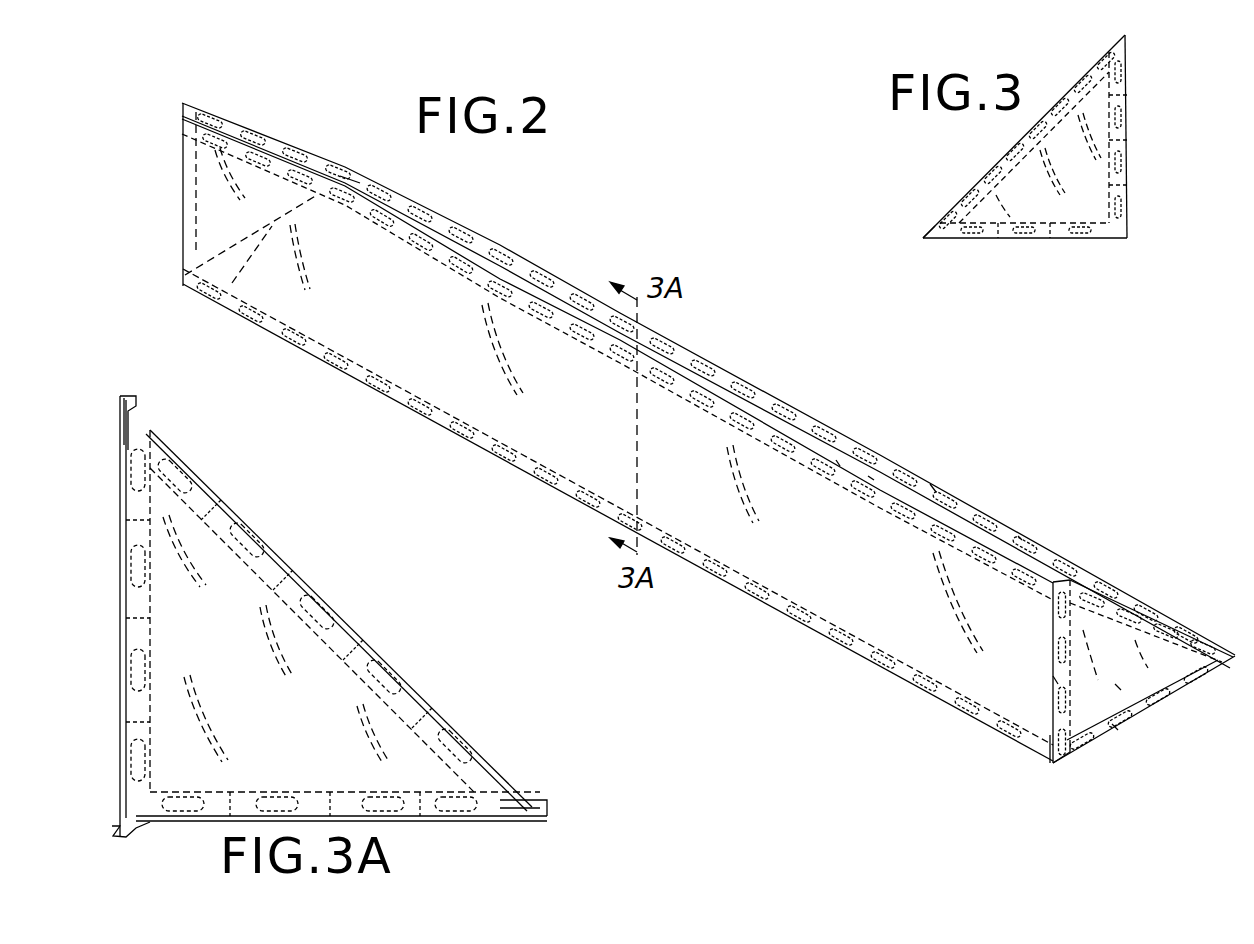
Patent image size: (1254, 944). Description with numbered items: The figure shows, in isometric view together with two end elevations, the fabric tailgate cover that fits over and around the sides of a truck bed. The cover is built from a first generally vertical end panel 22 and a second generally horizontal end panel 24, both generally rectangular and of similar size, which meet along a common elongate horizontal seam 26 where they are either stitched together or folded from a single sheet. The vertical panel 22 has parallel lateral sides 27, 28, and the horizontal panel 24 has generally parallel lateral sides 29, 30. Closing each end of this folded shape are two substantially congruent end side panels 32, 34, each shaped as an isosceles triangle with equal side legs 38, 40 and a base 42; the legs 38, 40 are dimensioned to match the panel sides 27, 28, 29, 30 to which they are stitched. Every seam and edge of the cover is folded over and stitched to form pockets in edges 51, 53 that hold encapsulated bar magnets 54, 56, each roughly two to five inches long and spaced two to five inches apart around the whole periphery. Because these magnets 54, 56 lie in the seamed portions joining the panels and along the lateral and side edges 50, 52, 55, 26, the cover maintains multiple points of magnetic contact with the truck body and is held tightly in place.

In FIG. 2, the vertical end panel 22 is at (777, 463).
In FIG. 3A, the vertical end panel 22 is at (122, 612).
In FIG. 2, the horizontal end panel 24 is at (746, 398).
In FIG. 3A, the horizontal end panel 24 is at (335, 792).
In FIG. 2, the seam 26 is at (792, 618).
In FIG. 3A, the seam 26 is at (126, 826).
In FIG. 2, the lateral side 27 is at (195, 207).
In FIG. 2, the lateral side 28 is at (1053, 682).
In FIG. 2, the lateral side 29 is at (232, 283).
In FIG. 2, the lateral side 30 is at (1020, 537).
In FIG. 2, the end side panel 32 is at (345, 166).
In FIG. 3A, the end side panel 32 is at (263, 697).
In FIG. 2, the end side panel 34 is at (1118, 687).
In FIG. 3, the end side panel 34 is at (925, 240).
In FIG. 3, the side leg 38 is at (1006, 240).
In FIG. 3, the side leg 40 is at (1128, 87).
In FIG. 3, the base 42 is at (1063, 93).
In FIG. 2, the side edge 50 is at (255, 237).
In FIG. 2, the folded-over edge 51 is at (838, 462).
In FIG. 2, the side edge 52 is at (182, 140).
In FIG. 2, the folded-over edge 53 is at (935, 487).
In FIG. 2, the magnet 54 is at (1060, 658).
In FIG. 2, the side edge 55 is at (1110, 587).
In FIG. 2, the magnet 56 is at (870, 477).
In FIG. 3A, the magnet 56 is at (125, 436).